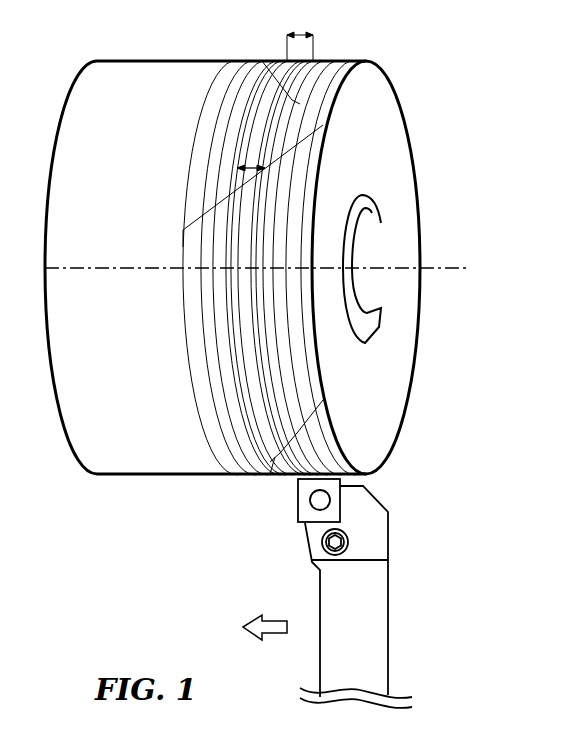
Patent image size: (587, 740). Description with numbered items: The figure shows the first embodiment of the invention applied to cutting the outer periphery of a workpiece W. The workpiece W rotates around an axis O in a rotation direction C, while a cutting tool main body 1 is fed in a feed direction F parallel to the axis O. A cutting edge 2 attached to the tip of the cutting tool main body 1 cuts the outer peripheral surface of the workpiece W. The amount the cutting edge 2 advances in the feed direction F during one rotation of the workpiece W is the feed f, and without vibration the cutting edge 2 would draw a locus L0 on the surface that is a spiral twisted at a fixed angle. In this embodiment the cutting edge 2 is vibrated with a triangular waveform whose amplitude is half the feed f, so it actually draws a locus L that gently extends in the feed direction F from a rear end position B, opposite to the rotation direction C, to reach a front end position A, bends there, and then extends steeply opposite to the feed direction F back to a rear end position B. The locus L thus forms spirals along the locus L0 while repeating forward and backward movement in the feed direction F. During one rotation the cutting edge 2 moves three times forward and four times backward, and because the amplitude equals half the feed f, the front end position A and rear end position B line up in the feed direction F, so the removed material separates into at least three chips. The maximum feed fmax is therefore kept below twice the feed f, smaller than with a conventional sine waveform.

The workpiece W is at (128, 77).
The cutting tool main body 1 is at (378, 634).
The cutting edge 2 is at (295, 480).
The rotation direction C is at (355, 269).
The axis O is at (447, 268).
The feed direction F is at (265, 645).
The locus L is at (235, 222).
The locus L0 is at (291, 90).
The feed f is at (300, 21).
The maximum feed fmax is at (240, 163).
The front end position A is at (239, 195).
The rear end position B is at (263, 166).